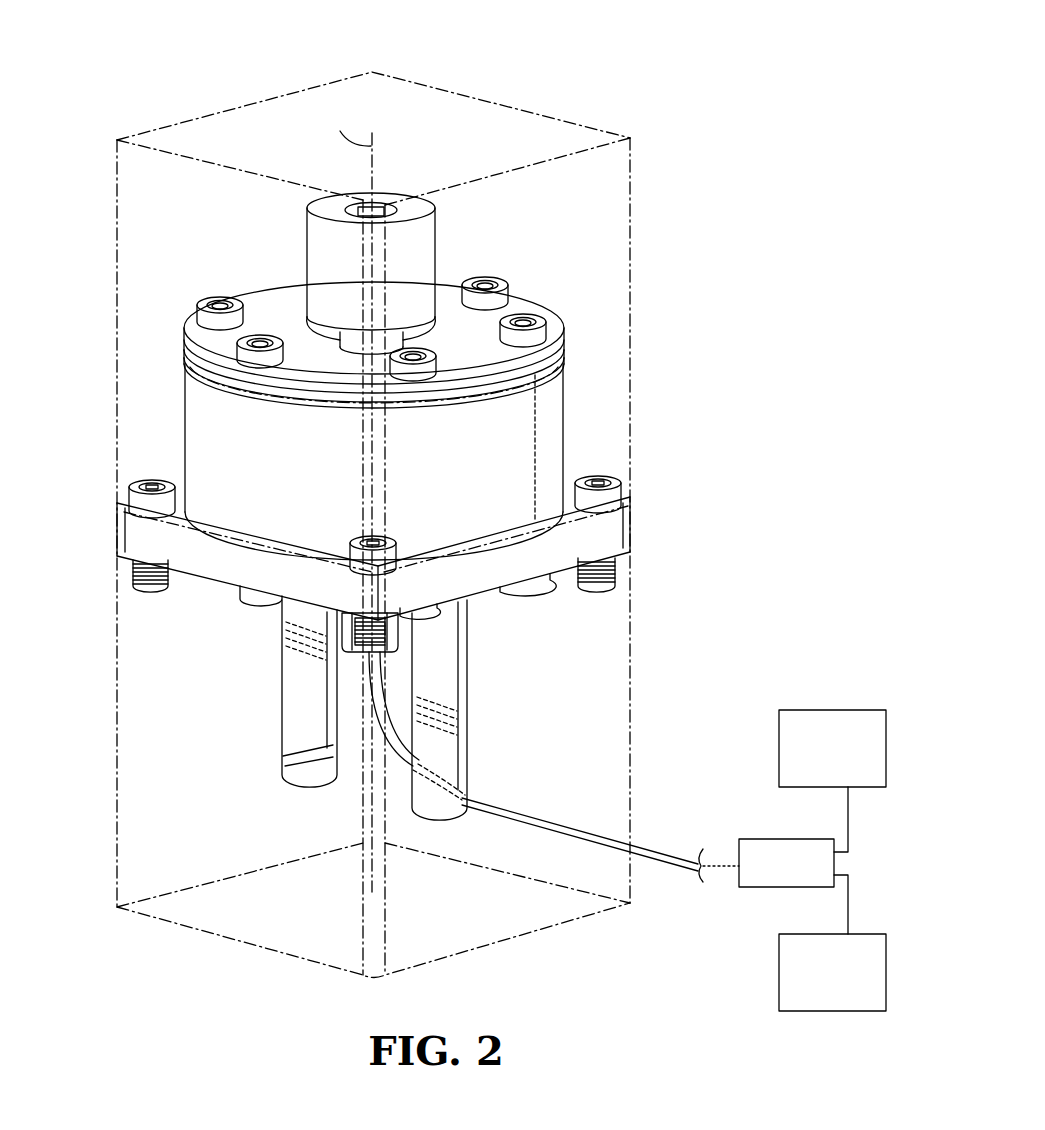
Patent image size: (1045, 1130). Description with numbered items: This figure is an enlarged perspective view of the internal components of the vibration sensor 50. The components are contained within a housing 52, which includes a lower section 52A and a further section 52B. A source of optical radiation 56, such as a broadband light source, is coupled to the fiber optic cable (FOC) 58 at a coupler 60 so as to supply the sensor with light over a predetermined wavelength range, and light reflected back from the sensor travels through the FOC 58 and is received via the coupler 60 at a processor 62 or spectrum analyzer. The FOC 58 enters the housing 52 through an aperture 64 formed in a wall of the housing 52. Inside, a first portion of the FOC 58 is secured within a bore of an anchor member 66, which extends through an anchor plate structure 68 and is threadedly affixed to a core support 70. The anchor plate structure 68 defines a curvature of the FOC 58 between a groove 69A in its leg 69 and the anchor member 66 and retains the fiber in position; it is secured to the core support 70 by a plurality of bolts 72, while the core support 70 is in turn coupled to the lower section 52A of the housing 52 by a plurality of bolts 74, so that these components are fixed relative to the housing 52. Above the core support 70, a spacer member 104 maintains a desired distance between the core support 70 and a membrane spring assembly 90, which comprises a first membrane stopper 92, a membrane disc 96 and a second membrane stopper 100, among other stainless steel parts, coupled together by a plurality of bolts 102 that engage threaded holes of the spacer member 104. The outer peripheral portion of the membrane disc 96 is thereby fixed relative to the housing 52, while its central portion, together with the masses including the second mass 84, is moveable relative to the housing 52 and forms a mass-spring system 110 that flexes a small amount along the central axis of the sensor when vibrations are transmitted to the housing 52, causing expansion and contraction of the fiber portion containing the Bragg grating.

The vibration sensor 50 is at (625, 98).
The housing 52 is at (605, 215).
The lower section of the housing 52A is at (633, 752).
The second side wall of housing 52B is at (115, 378).
The source of optical radiation 56 is at (822, 708).
The FOC 58 is at (657, 846).
The coupler 60 is at (748, 888).
The processor 62 is at (833, 1013).
The aperture 64 is at (545, 812).
The anchor member 66 is at (358, 652).
The anchor plate structure 68 is at (292, 690).
The leg 69 is at (447, 668).
The groove 69A is at (462, 800).
The core support 70 is at (633, 528).
The bolts 72 is at (247, 603).
The bolts 74 is at (133, 494).
The second mass 84 is at (430, 248).
The membrane spring assembly 90 is at (568, 343).
The first membrane stopper 92 is at (545, 378).
The membrane disc 96 is at (571, 344).
The second membrane stopper 100 is at (574, 338).
The bolts 102 is at (208, 314).
The spacer member 104 is at (552, 445).
The mass-spring system 110 is at (405, 187).